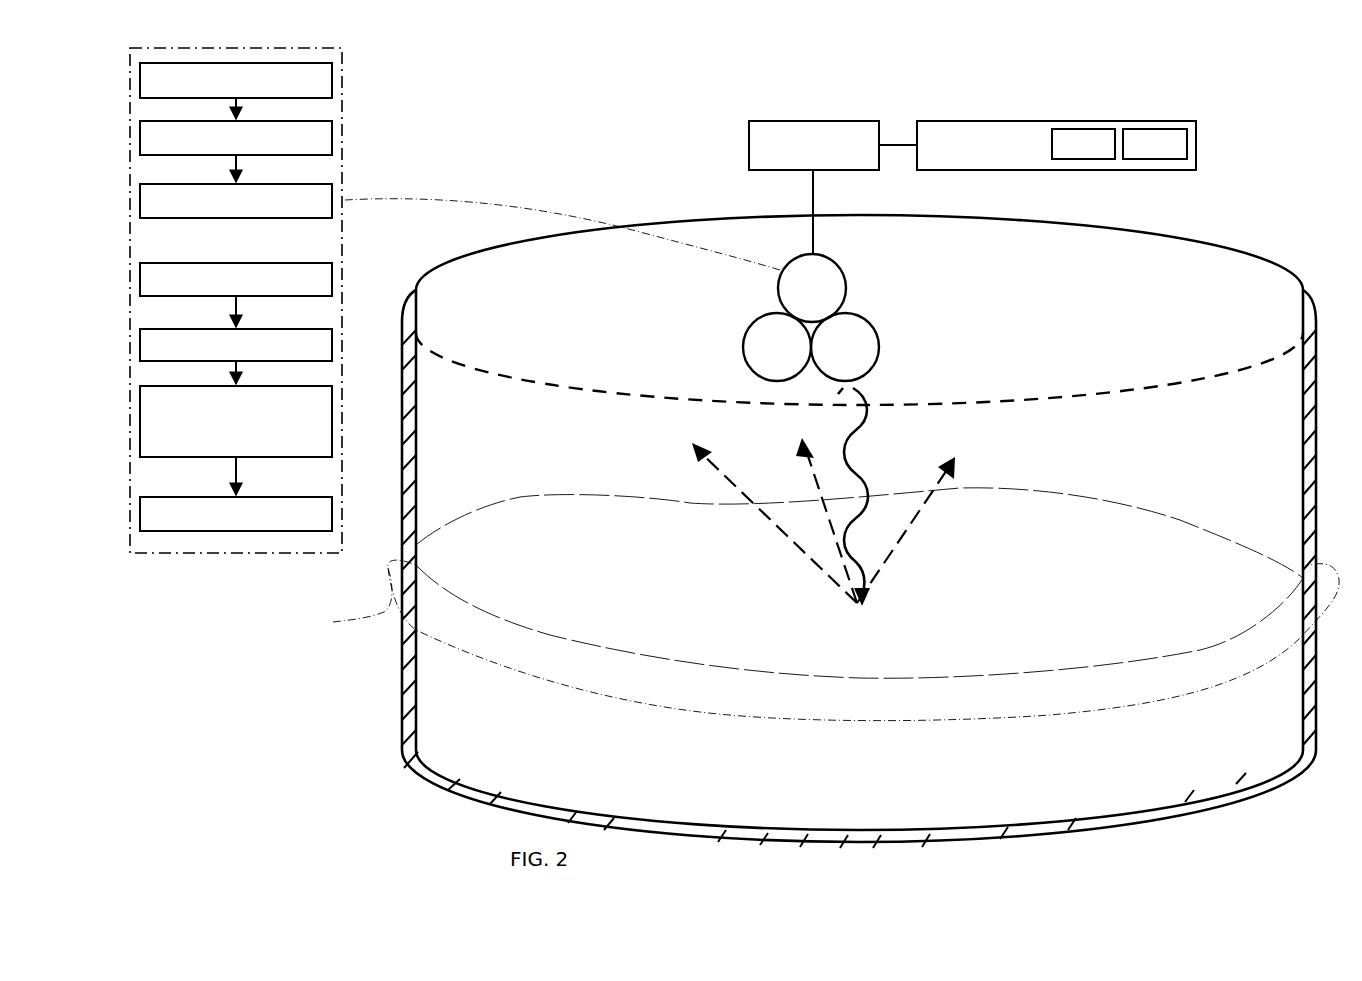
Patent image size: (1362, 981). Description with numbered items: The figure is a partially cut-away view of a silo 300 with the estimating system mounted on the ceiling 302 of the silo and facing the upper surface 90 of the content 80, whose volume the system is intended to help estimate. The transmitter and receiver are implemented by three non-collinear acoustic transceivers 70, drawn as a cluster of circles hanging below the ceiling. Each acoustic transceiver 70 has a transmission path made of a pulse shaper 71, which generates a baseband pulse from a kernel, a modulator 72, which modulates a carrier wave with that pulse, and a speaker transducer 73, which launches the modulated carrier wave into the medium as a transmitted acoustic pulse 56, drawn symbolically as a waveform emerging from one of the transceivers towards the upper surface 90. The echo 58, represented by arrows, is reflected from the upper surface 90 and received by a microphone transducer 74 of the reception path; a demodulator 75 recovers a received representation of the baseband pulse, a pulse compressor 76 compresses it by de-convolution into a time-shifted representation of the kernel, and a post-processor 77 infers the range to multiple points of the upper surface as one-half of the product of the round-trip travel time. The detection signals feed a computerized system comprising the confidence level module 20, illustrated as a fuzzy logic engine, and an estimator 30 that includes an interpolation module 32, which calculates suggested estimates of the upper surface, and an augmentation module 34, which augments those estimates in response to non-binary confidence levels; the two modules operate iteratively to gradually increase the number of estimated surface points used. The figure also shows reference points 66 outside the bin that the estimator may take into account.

The pulse shaper 71 is at (236, 80).
The modulator 72 is at (236, 138).
The transducer (speaker) 73 is at (236, 201).
The transducer (microphone) 74 is at (236, 279).
The demodulator 75 is at (236, 345).
The pulse compressor 76 is at (236, 421).
The post-processor 77 is at (236, 514).
The confidence level module 20 is at (814, 187).
The estimator 30 is at (1056, 145).
The interpolation module 32 is at (1083, 144).
The augmentation module 34 is at (1155, 144).
The acoustic transceivers 70 is at (811, 317).
The silo 300 is at (1318, 372).
The ceiling 302 is at (1080, 232).
The acoustic pulse 56 is at (854, 497).
The echo 58 is at (818, 513).
The upper surface 90 is at (586, 497).
The reference points 66 is at (819, 640).
The content 80 is at (503, 708).